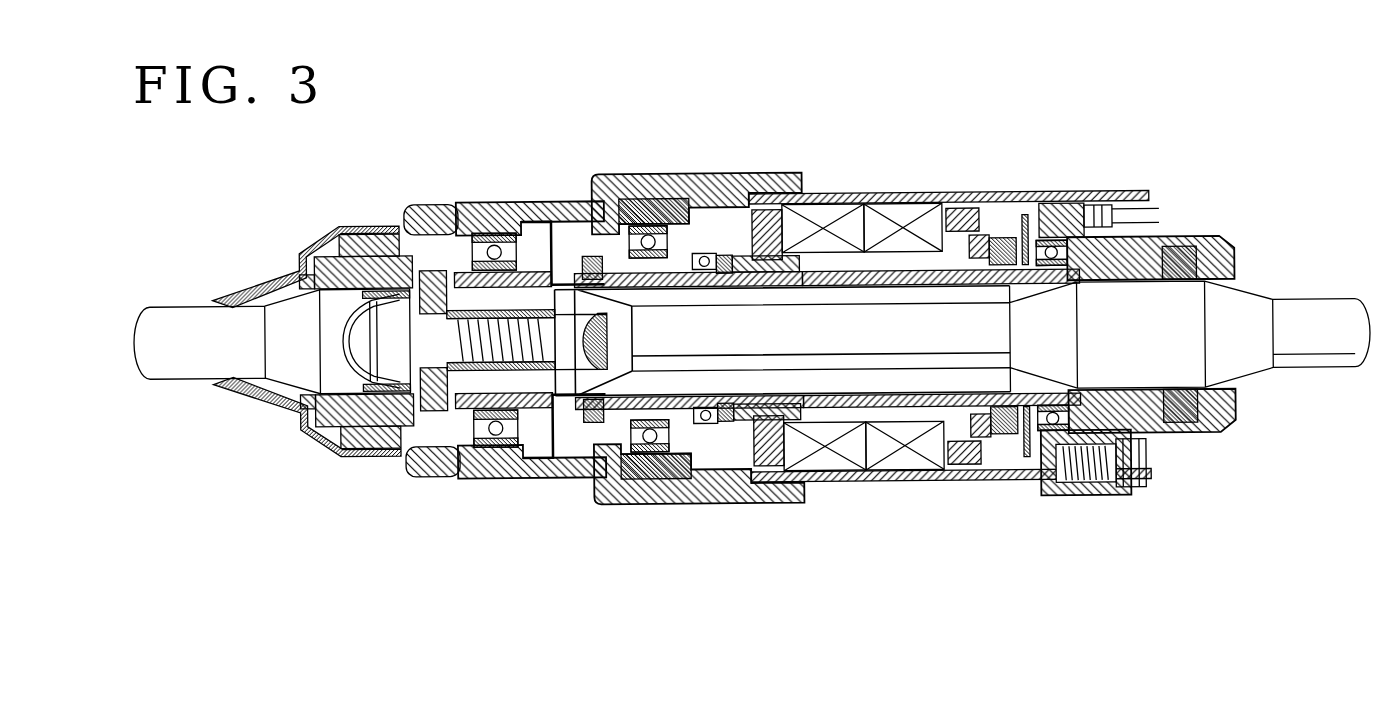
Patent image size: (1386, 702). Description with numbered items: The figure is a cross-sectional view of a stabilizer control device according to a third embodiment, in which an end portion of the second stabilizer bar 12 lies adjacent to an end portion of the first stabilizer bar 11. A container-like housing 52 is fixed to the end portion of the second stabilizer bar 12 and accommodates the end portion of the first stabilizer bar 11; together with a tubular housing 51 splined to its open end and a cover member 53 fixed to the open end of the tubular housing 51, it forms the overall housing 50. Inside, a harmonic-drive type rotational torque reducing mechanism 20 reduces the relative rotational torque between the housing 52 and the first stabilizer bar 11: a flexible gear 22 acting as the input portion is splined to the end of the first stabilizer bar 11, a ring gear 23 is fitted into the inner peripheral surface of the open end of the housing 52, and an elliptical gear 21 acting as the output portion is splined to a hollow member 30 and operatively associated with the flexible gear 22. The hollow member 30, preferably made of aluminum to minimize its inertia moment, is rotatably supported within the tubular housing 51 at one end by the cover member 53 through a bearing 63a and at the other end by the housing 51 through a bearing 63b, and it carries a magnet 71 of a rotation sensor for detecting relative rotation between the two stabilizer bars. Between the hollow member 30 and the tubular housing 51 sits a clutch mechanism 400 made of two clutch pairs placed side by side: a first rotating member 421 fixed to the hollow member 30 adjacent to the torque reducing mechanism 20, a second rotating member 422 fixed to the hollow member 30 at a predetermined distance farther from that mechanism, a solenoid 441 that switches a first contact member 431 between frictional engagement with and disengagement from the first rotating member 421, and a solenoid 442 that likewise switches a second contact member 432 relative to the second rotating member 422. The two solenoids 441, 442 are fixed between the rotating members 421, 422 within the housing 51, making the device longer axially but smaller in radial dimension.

The first stabilizer bar 11 is at (1308, 302).
The second stabilizer bar 12 is at (205, 301).
The rotational torque reducing mechanism 20 is at (535, 487).
The elliptical gear 21 is at (600, 460).
The flexible gear 22 is at (507, 480).
The ring gear 23 is at (655, 497).
The hollow member 30 is at (707, 503).
The overall housing 50 is at (774, 172).
The tubular housing 51 is at (860, 193).
The housing 52 is at (515, 208).
The cover member 53 is at (1205, 238).
The bearing 63a is at (1050, 243).
The bearing 63b is at (672, 210).
The magnet 71 is at (1040, 488).
The clutch mechanism 400 is at (867, 493).
The first rotating member 421 is at (723, 505).
The second rotating member 422 is at (1003, 487).
The first contact member 431 is at (773, 500).
The second contact member 432 is at (958, 487).
The solenoid 441 is at (832, 483).
The solenoid 442 is at (925, 483).